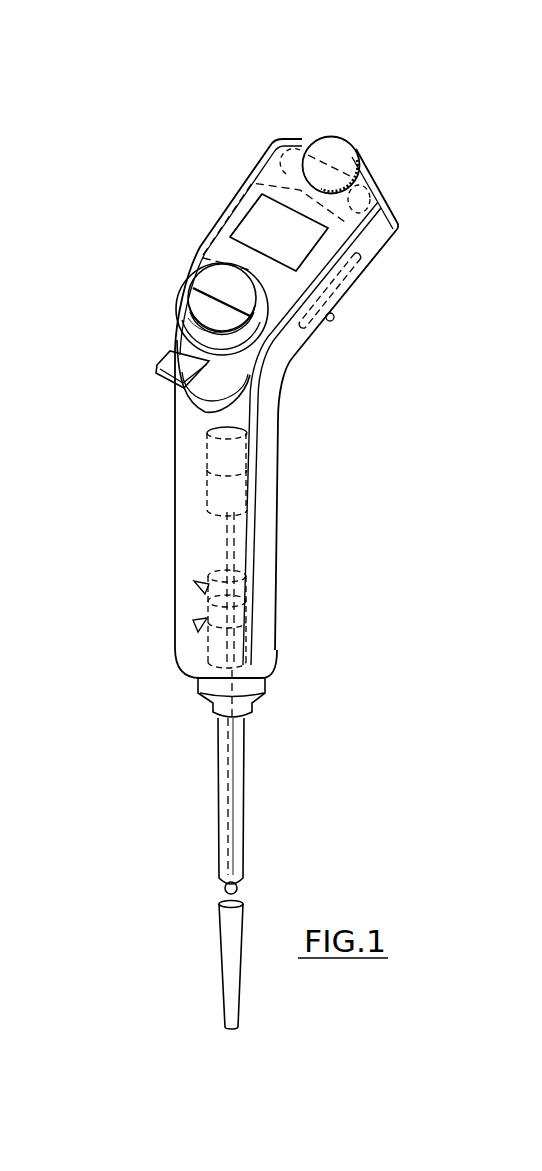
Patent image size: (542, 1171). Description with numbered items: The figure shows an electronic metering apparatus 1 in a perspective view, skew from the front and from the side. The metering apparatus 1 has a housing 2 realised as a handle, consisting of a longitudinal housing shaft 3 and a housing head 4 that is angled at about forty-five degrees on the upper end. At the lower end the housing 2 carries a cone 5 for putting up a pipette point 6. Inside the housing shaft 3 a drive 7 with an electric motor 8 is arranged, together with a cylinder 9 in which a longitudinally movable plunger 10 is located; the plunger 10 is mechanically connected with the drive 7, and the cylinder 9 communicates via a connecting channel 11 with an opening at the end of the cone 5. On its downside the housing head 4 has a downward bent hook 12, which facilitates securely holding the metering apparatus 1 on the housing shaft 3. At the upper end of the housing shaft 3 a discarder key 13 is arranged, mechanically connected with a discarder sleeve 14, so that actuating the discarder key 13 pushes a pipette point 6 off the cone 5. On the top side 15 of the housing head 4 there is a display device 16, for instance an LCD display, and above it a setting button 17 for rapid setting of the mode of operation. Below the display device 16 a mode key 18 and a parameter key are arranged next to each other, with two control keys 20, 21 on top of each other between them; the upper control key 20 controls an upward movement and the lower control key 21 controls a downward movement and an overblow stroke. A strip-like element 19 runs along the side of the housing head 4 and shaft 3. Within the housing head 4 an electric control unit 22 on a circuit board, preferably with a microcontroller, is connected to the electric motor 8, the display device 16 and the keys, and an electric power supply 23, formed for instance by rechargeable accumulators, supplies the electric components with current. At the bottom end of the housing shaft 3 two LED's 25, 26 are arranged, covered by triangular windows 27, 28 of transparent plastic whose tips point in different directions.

The metering apparatus 1 is at (152, 534).
The housing 2 is at (183, 496).
The housing shaft 3 is at (270, 545).
The housing head 4 is at (340, 285).
The cone 5 is at (223, 887).
The pipette point 6 is at (232, 983).
The drive 7 is at (235, 490).
The electric motor 8 is at (237, 457).
The cylinder 9 is at (250, 648).
The plunger 10 is at (250, 608).
The connecting channel 11 is at (229, 745).
The hook 12 is at (330, 317).
The discarder key 13 is at (158, 370).
The discarder sleeve 14 is at (226, 816).
The top side 15 is at (245, 228).
The display device 16 is at (262, 232).
The setting button 17 is at (336, 150).
The mode key 18 is at (207, 276).
The strip 19 is at (290, 355).
The upper control key 20 is at (217, 283).
The lower control key 21 is at (190, 319).
The electric control unit 22 is at (336, 235).
The electric power supply 23 is at (367, 167).
The LED 25 is at (195, 587).
The LED 26 is at (195, 624).
The window 27 is at (201, 587).
The window 28 is at (200, 625).